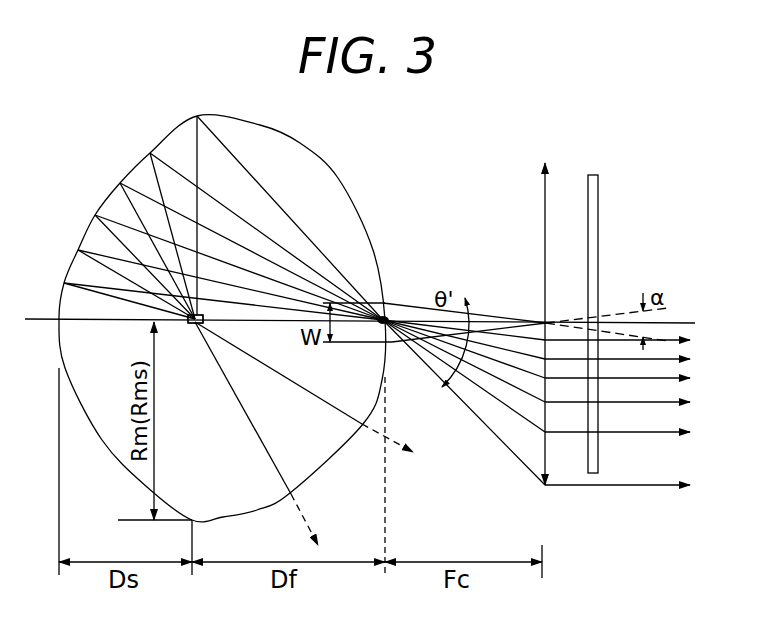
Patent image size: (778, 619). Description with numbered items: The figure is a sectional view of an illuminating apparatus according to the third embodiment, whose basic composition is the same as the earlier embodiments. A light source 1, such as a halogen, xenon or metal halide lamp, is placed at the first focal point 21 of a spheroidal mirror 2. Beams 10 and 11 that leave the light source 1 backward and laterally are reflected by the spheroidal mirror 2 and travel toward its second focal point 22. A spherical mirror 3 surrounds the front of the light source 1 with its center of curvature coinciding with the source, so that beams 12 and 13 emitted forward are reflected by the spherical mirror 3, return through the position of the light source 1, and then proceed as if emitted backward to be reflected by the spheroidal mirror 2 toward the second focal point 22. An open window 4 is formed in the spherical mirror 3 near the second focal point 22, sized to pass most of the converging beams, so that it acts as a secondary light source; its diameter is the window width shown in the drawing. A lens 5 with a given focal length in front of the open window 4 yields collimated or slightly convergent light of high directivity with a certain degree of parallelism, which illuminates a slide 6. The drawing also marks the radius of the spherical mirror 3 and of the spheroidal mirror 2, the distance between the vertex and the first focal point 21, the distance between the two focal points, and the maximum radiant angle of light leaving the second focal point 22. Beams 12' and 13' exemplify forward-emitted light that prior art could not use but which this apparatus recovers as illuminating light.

The light source 1 is at (195, 326).
The first focal point 21 is at (195, 319).
The spheroidal mirror 2 is at (110, 189).
The spherical mirror 3 is at (340, 181).
The open window 4 is at (386, 304).
The second focal point 22 is at (383, 320).
The lens 5 is at (546, 206).
The slide 6 is at (599, 206).
The beam 10 is at (118, 302).
The beam 11 is at (198, 206).
The beam 12 is at (243, 408).
The beam 12' is at (323, 519).
The beam 13 is at (278, 373).
The beam 13' is at (407, 427).